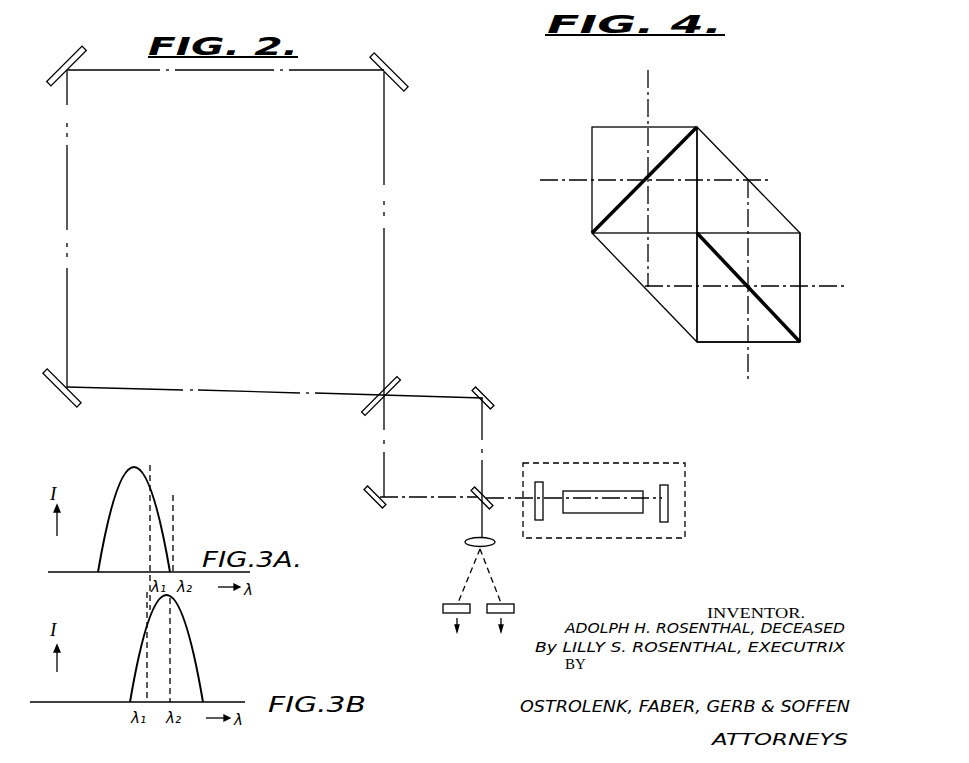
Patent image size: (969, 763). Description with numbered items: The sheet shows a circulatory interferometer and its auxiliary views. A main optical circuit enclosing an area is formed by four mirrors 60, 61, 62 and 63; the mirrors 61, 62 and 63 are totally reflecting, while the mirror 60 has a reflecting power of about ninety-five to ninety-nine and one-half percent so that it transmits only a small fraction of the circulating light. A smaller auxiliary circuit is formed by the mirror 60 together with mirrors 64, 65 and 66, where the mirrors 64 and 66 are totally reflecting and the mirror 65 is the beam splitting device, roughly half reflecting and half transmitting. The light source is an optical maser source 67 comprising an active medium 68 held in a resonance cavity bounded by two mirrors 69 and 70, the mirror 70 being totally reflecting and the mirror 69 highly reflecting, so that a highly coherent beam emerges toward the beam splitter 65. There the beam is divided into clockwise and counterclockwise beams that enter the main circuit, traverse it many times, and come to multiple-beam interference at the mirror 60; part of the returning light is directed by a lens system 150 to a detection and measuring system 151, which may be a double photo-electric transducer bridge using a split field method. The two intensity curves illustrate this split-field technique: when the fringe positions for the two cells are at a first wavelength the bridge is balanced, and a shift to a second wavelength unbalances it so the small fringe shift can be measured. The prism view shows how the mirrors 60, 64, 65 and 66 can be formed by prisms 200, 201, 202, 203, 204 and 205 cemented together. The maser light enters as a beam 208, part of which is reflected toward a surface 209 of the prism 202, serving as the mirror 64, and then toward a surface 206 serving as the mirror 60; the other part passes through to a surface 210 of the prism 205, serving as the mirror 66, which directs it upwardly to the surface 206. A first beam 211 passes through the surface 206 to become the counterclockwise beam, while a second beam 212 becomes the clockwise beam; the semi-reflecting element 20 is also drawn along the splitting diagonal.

In FIG. 2, the mirror 60 is at (399, 388).
In FIG. 2, the mirror 61 is at (396, 70).
In FIG. 2, the mirror 62 is at (63, 68).
In FIG. 2, the mirror 63 is at (64, 405).
In FIG. 2, the mirror 64 is at (493, 393).
In FIG. 2, the beam splitter 65 is at (490, 497).
In FIG. 2, the mirror 66 is at (370, 505).
In FIG. 2, the optical maser source 67 is at (584, 462).
In FIG. 2, the active medium 68 is at (600, 514).
In FIG. 2, the mirror 69 is at (538, 521).
In FIG. 2, the mirror 70 is at (664, 523).
In FIG. 2, the lens system 150 is at (466, 542).
In FIG. 2, the detection and measuring system 151 is at (487, 619).
In FIG. 4, the semi-reflecting surface 20 is at (768, 302).
In FIG. 4, the prism 200 is at (611, 140).
In FIG. 4, the prism 201 is at (687, 162).
In FIG. 4, the prism 202 is at (730, 196).
In FIG. 4, the prism 203 is at (787, 262).
In FIG. 4, the prism 204 is at (725, 332).
In FIG. 4, the prism 205 is at (672, 303).
In FIG. 4, the surface 206 is at (605, 212).
In FIG. 4, the light beam 208 is at (806, 292).
In FIG. 4, the surface 209 is at (778, 210).
In FIG. 4, the surface 210 is at (647, 294).
In FIG. 4, the first beam of light 211 is at (648, 81).
In FIG. 4, the second beam 212 is at (573, 180).